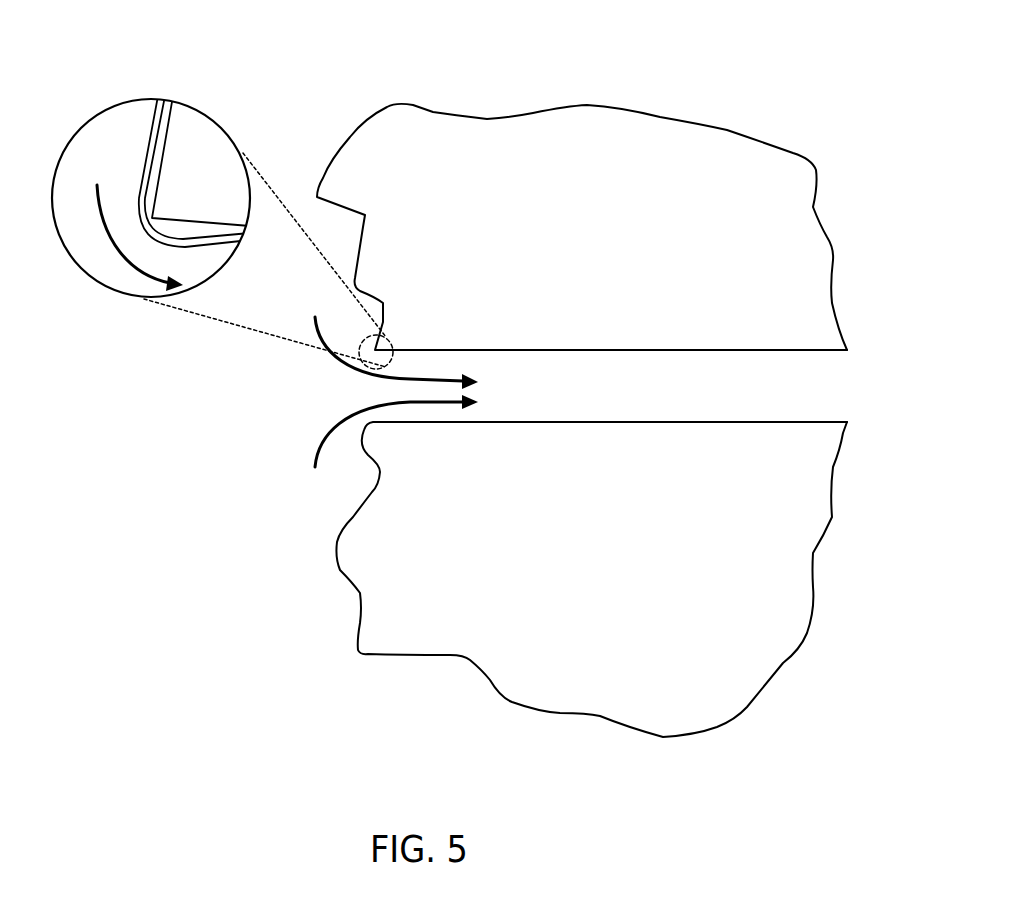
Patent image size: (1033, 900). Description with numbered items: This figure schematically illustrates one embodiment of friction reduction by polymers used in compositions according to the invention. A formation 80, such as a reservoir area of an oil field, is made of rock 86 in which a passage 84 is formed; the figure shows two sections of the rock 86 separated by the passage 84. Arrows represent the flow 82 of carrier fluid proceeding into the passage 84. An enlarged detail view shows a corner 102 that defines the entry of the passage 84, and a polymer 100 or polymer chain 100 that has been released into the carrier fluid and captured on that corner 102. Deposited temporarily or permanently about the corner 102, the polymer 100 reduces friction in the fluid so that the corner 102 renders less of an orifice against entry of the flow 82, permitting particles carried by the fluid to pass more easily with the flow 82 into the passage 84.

The formation 80 is at (612, 80).
The flow 82 is at (116, 249).
The passage 84 is at (670, 400).
The rock 86 is at (579, 245).
The polymer chain 100 is at (142, 163).
The corner 102 is at (395, 330).